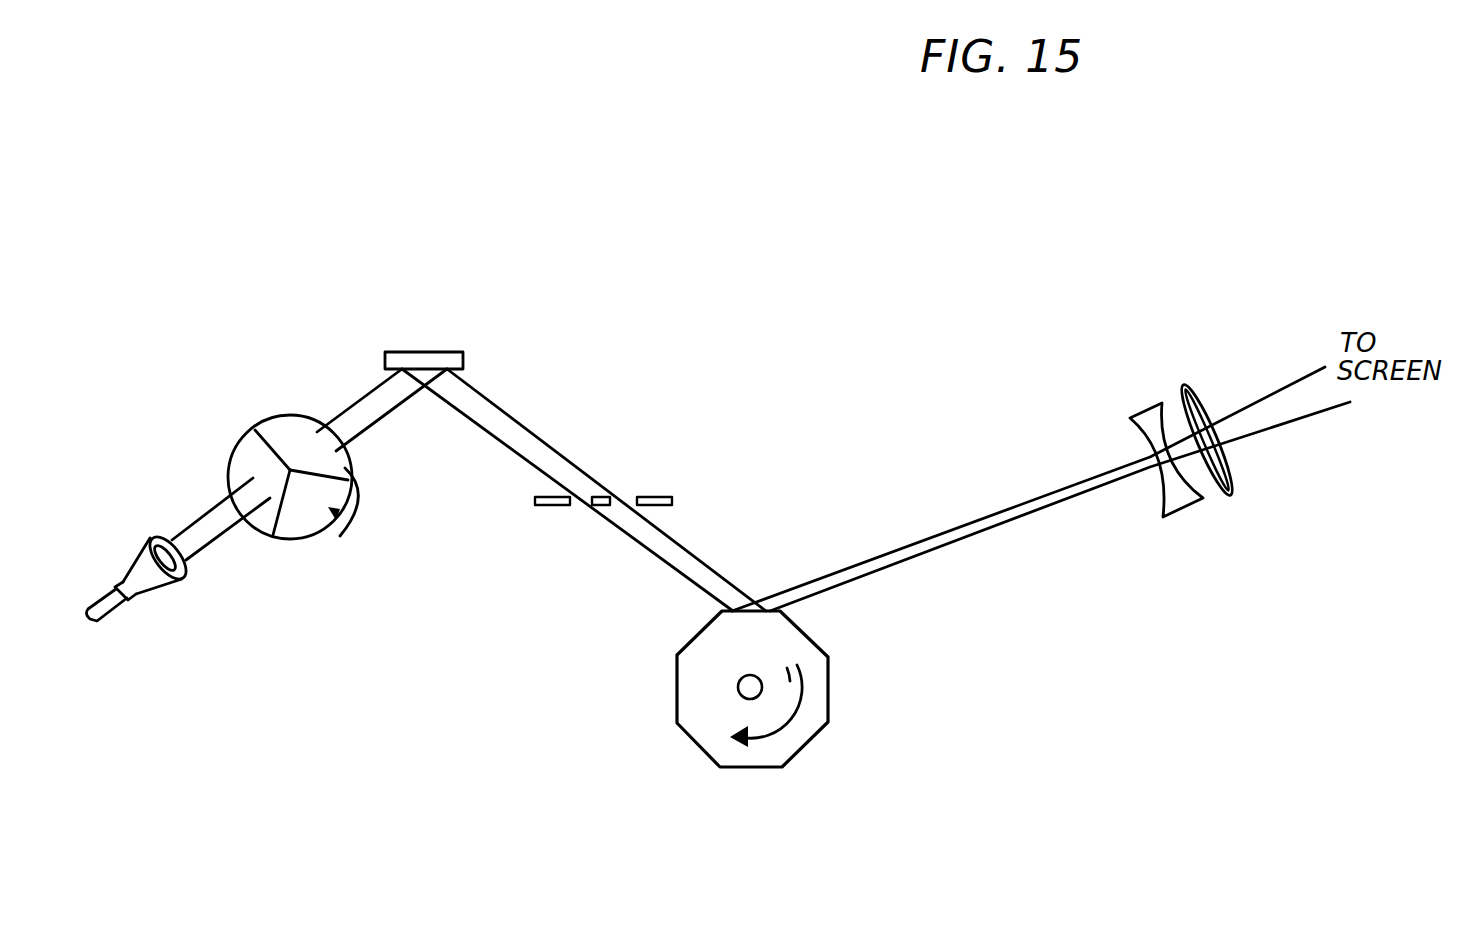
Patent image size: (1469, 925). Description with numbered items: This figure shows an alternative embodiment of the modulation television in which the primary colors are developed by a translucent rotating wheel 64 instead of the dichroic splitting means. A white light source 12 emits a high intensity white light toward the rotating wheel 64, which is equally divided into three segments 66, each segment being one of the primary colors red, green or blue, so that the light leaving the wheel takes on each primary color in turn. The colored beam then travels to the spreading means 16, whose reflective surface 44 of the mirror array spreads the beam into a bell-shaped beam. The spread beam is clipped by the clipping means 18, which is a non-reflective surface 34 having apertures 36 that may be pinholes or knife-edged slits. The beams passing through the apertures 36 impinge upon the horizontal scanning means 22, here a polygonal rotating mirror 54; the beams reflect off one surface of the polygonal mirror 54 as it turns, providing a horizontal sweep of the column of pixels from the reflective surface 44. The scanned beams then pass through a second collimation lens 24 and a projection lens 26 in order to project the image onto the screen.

The white light source 12 is at (130, 588).
The translucent rotating wheel 64 is at (287, 428).
The segments 66 is at (263, 515).
The spreading means 16 is at (413, 335).
The reflective surface 44 is at (450, 361).
The non-reflective surface 34 is at (543, 497).
The apertures 36 is at (627, 510).
The clipping means 18 is at (642, 488).
The horizontal scanning means 22 is at (660, 709).
The polygonal rotating mirror 54 is at (817, 687).
The second collimation lens 24 is at (1188, 507).
The projection lens 26 is at (1238, 466).